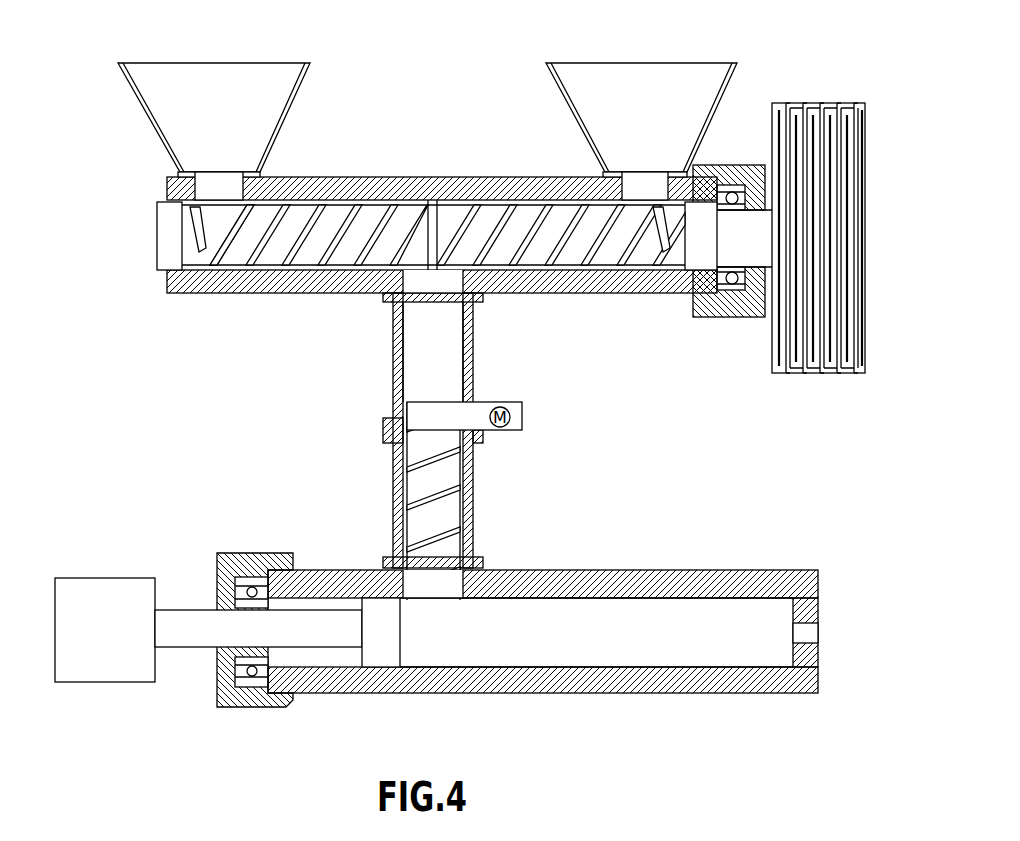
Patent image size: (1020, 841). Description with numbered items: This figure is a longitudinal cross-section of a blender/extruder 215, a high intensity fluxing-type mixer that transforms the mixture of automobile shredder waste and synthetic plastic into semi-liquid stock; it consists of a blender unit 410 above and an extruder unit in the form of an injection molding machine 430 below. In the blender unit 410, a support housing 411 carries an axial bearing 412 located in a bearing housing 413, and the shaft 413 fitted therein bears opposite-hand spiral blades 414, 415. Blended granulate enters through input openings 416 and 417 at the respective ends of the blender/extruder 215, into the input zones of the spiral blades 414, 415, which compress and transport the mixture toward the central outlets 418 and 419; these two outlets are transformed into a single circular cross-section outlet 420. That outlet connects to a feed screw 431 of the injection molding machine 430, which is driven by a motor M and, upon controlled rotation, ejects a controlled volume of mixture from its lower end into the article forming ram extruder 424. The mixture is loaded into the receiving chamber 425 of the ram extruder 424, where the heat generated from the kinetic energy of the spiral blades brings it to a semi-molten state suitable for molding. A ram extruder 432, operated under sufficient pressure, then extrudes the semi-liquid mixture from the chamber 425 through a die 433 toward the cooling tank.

The blender/extruder 215 is at (134, 290).
The blender unit 410 is at (132, 152).
The support housing 411 is at (317, 188).
The axial bearing 412 is at (730, 165).
The bearing housing 413 is at (752, 312).
The spiral blade 414 is at (600, 250).
The spiral blade 415 is at (230, 253).
The input opening 416 is at (210, 187).
The input opening 417 is at (632, 185).
The central outlet 418 is at (420, 283).
The central outlet 419 is at (443, 283).
The single circular cross-section outlet 420 is at (413, 378).
The ram extruder 424 is at (633, 607).
The receiving chamber 425 is at (615, 649).
The injection molding machine 430 is at (236, 548).
The feed screw 431 is at (445, 508).
The ram extruder 432 is at (187, 638).
The die 433 is at (810, 635).